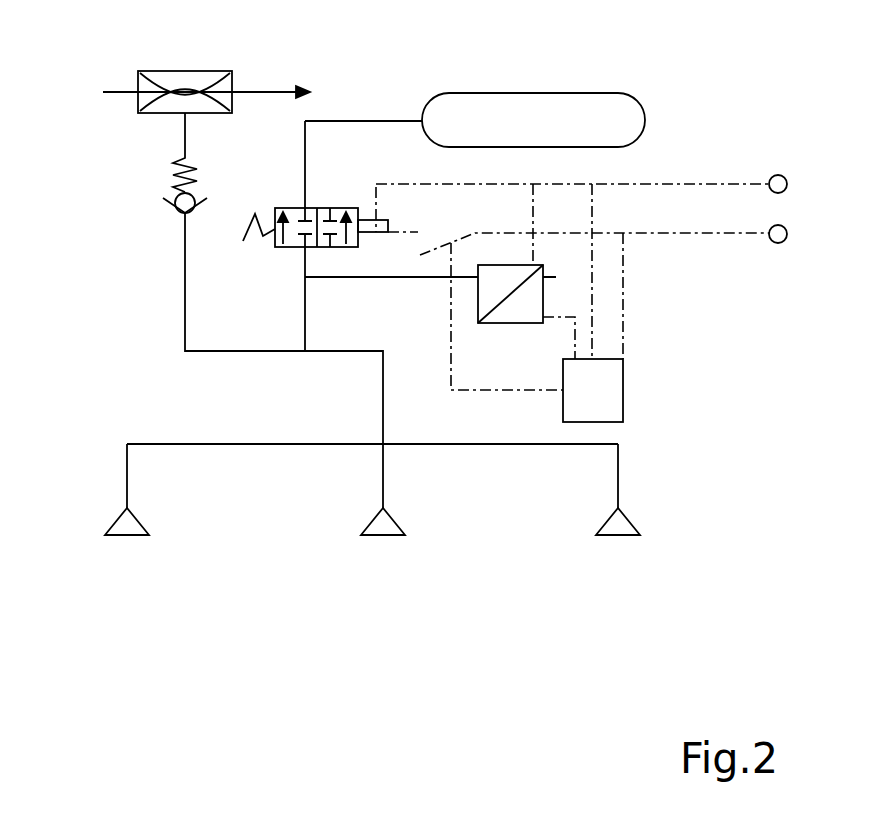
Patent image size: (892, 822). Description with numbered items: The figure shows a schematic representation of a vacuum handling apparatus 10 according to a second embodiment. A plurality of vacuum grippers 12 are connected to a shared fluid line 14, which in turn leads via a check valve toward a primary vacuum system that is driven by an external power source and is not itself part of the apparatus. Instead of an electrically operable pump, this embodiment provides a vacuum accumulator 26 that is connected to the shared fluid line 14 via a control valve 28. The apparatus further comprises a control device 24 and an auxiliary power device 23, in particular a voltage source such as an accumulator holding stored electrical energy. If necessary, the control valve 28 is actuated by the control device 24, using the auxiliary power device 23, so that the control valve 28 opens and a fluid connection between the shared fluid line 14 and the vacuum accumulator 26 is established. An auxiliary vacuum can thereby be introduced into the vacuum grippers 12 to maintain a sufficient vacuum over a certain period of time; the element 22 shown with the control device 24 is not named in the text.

The vacuum handling apparatus 10 is at (66, 333).
The vacuum grippers 12 is at (122, 537).
The shared fluid line 14 is at (238, 353).
The control unit 22 is at (544, 298).
The auxiliary power device 23 is at (806, 180).
The control device 24 is at (624, 398).
The vacuum accumulator 26 is at (515, 94).
The control valve 28 is at (335, 208).